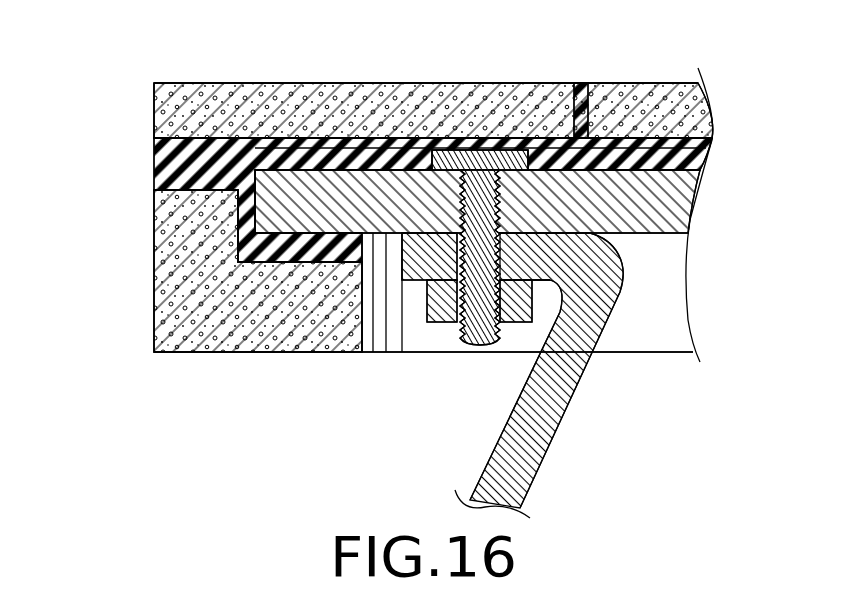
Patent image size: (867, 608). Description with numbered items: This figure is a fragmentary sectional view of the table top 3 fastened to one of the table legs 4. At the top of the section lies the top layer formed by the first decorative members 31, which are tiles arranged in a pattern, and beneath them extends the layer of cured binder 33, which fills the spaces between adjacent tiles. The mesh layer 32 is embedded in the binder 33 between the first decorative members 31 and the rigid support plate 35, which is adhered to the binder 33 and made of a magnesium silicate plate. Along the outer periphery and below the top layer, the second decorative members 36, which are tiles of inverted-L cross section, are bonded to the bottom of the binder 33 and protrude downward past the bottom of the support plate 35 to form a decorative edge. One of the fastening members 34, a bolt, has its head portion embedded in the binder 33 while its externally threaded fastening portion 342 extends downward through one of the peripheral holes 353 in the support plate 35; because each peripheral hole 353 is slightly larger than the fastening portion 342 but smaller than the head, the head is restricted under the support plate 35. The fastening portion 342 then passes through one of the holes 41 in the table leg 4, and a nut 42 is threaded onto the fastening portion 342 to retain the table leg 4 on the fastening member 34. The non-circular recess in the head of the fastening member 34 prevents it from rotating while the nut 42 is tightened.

The table top 3 is at (140, 115).
The first decorative members 31 is at (277, 97).
The mesh layer 32 is at (398, 140).
The binder 33 is at (167, 163).
The fastening members 34 is at (425, 333).
The fastening portion 342 is at (473, 343).
The support plate 35 is at (647, 233).
The peripheral holes 353 is at (500, 193).
The second decorative members 36 is at (173, 283).
The table legs 4 is at (543, 422).
The holes 41 is at (500, 257).
The nuts 42 is at (517, 323).